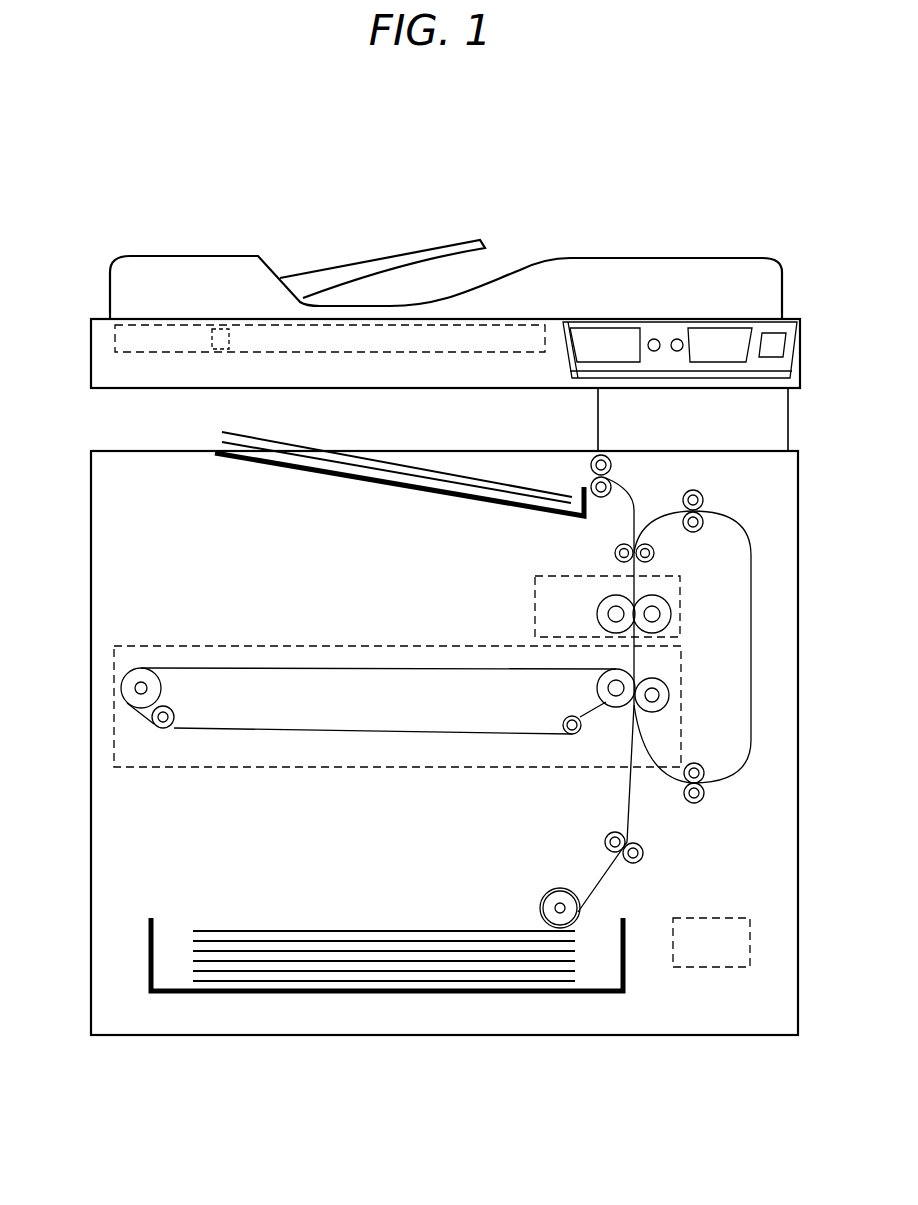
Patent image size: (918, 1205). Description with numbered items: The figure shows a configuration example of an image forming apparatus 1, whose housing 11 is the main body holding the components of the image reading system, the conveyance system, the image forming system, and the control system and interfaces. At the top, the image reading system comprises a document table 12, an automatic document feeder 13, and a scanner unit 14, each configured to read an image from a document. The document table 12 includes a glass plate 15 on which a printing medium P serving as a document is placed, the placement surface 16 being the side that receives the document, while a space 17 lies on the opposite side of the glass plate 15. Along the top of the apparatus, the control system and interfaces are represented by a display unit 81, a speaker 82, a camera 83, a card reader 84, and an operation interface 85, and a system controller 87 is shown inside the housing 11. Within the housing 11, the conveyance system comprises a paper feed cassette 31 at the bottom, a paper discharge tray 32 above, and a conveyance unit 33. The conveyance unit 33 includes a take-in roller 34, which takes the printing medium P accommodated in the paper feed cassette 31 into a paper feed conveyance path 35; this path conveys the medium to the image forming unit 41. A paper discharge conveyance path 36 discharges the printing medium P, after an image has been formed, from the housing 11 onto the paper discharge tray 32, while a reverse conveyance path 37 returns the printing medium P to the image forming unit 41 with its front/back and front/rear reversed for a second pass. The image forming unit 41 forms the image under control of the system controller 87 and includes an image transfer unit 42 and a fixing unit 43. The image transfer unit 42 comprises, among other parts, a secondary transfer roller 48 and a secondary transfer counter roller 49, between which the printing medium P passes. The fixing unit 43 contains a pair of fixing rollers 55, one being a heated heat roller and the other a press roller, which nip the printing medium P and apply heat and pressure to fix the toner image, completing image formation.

The image forming apparatus 1 is at (452, 148).
The housing 11 is at (91, 525).
The document table 12 is at (91, 357).
The automatic document feeder 13 is at (200, 258).
The scanner unit 14 is at (215, 330).
The glass plate 15 is at (511, 318).
The placement surface 16 is at (392, 318).
The space 17 is at (115, 332).
The paper feed cassette 31 is at (148, 952).
The paper discharge tray 32 is at (300, 450).
The conveyance unit 33 is at (592, 550).
The take-in roller 34 is at (563, 887).
The paper feed conveyance path 35 is at (625, 815).
The paper discharge conveyance path 36 is at (633, 505).
The reverse conveyance path 37 is at (751, 648).
The image forming unit 41 is at (390, 573).
The image transfer unit 42 is at (246, 645).
The fixing unit 43 is at (535, 615).
The secondary transfer roller 48 is at (670, 695).
The secondary transfer counter roller 49 is at (597, 689).
The pair of fixing rollers 55 is at (597, 613).
The display unit 81 is at (603, 340).
The speaker 82 is at (654, 339).
The camera 83 is at (677, 339).
The card reader 84 is at (720, 328).
The operation interface 85 is at (773, 333).
The system controller 87 is at (710, 968).
The printing medium P is at (480, 494).